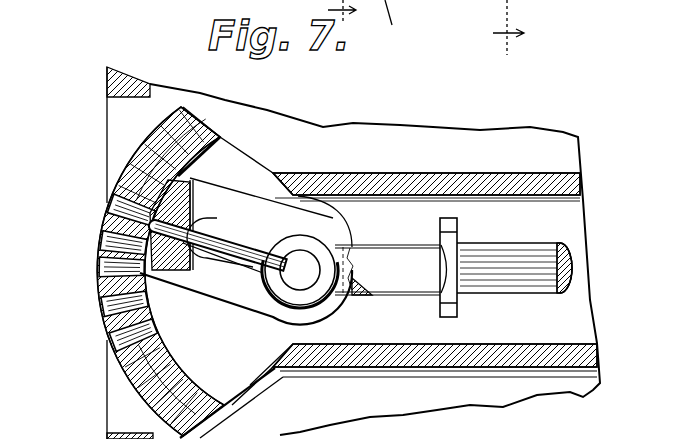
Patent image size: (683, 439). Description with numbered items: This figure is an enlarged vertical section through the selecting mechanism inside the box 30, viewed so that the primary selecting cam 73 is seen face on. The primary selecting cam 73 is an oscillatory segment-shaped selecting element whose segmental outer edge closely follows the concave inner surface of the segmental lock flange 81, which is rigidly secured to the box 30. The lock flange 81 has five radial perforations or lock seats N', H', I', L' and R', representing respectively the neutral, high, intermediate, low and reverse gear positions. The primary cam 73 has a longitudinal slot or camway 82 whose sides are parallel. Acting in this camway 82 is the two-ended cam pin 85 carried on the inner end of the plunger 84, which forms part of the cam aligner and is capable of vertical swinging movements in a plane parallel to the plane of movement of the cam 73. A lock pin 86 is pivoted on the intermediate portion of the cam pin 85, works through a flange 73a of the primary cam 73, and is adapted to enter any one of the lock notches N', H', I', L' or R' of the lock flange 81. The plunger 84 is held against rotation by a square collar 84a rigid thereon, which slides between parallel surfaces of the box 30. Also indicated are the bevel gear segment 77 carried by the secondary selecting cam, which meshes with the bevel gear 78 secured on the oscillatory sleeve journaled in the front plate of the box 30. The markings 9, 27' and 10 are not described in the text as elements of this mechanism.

The box 30 is at (110, 125).
The segmental lock flange 81 is at (123, 373).
The lock seat N' is at (99, 206).
The lock seat H' is at (92, 241).
The lock seat I' is at (90, 272).
The lock seat L' is at (96, 308).
The lock seat R' is at (107, 340).
The primary selecting cam 73 is at (262, 213).
The flange 73a is at (216, 137).
The lock pin 86 is at (217, 243).
The camway 82 is at (233, 260).
The cam pin 85 is at (301, 269).
The plunger 84 is at (511, 250).
The square collar 84a is at (440, 305).
The bevel gear segment 77 is at (414, 391).
The bevel gear 78 is at (454, 405).
The section line 9 is at (343, 16).
The section line 27' is at (407, 20).
The section line 10 is at (504, 31).